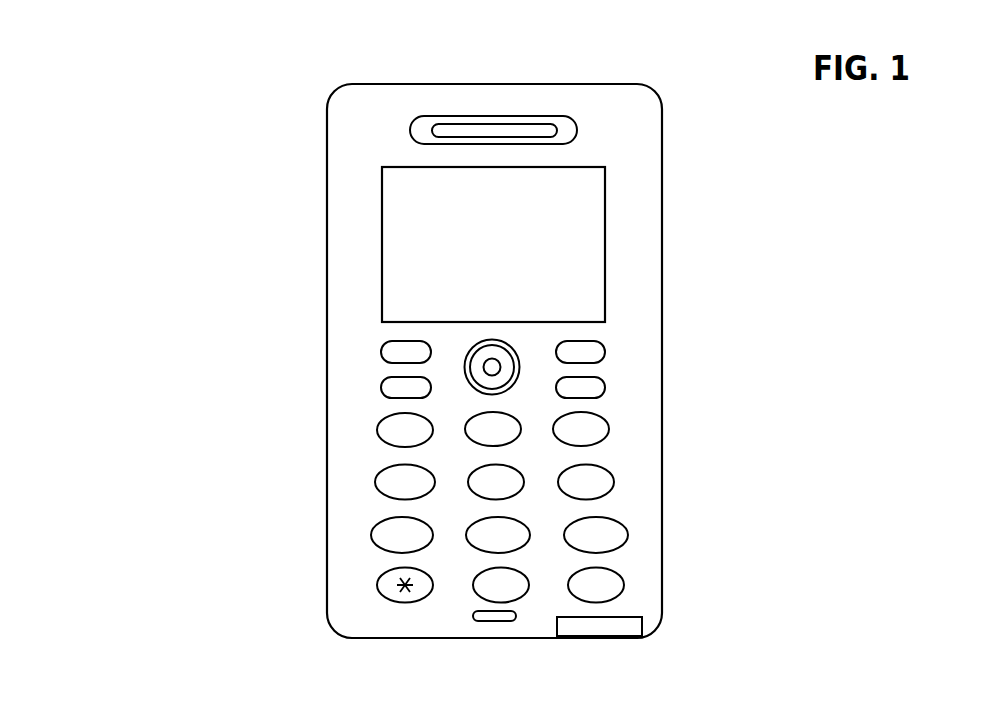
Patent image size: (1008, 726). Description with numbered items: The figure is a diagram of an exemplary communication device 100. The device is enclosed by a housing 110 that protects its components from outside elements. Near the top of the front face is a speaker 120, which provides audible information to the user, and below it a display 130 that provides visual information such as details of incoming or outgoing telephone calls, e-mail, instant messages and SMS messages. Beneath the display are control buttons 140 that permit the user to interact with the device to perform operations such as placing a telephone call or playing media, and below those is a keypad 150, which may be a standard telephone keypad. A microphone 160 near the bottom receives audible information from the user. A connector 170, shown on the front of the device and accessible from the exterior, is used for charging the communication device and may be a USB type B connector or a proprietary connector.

The communication device 100 is at (126, 57).
The housing 110 is at (327, 120).
The speaker 120 is at (577, 130).
The display 130 is at (605, 248).
The control buttons 140 is at (618, 339).
The keypad 150 is at (637, 579).
The microphone 160 is at (497, 621).
The connector 170 is at (625, 626).